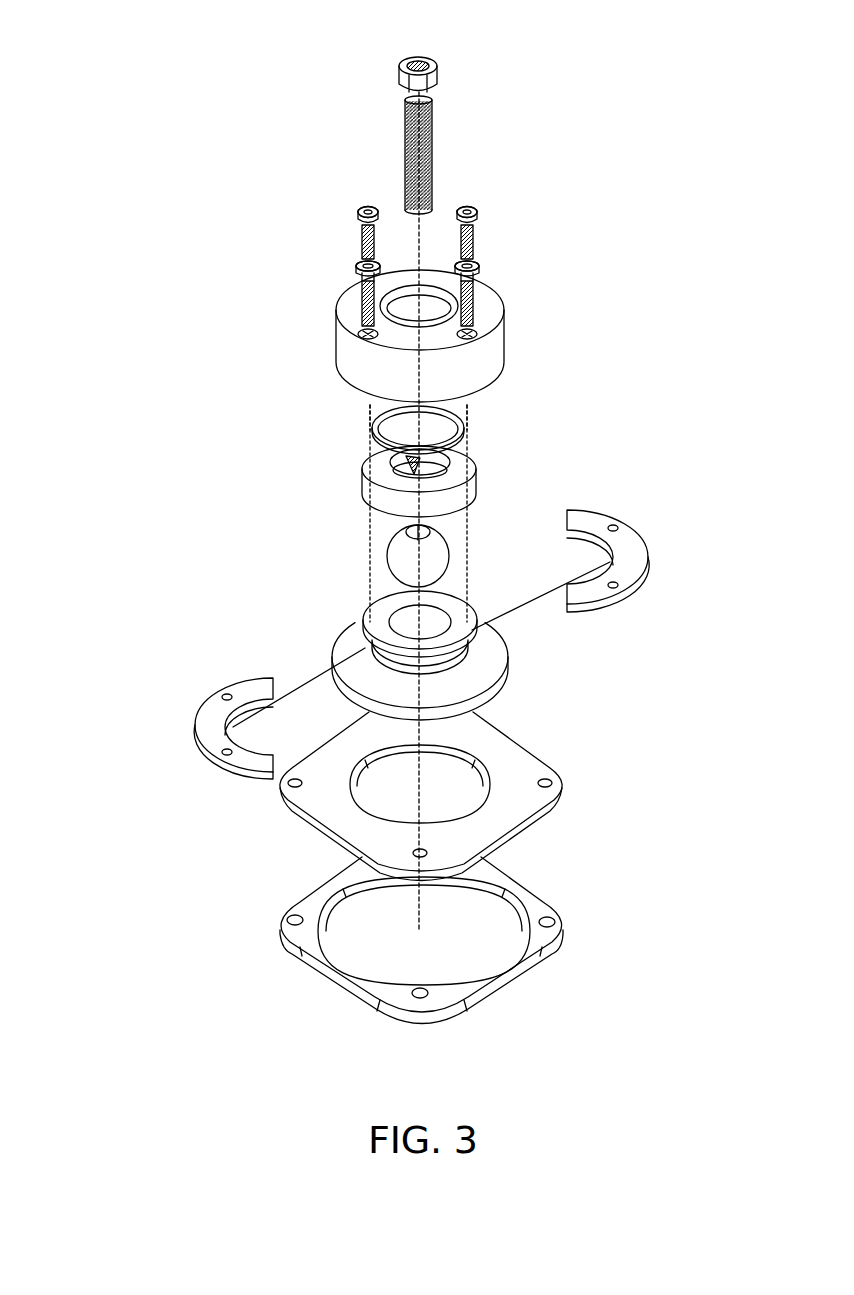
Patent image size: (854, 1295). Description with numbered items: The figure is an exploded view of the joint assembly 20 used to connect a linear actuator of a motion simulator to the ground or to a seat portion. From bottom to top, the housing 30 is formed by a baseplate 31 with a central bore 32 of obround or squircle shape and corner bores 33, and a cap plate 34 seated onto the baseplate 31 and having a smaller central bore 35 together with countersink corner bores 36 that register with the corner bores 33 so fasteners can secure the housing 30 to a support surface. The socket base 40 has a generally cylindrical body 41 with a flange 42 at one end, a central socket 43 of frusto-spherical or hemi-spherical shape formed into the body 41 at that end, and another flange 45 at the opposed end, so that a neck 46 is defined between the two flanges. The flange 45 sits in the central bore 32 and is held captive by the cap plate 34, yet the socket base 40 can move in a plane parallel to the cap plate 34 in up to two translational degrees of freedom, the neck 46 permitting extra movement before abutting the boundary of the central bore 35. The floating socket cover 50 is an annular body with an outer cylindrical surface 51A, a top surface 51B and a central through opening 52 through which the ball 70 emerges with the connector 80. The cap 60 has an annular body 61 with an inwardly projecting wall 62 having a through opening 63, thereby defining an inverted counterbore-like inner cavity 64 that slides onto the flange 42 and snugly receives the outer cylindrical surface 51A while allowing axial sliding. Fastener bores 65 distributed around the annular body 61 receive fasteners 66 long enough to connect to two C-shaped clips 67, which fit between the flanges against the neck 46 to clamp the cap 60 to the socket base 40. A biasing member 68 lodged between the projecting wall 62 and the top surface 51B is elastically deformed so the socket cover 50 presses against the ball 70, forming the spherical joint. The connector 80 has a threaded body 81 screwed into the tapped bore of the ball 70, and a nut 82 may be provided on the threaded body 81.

The joint assembly 20 is at (158, 262).
The housing 30 is at (415, 890).
The baseplate 31 is at (330, 968).
The central bore 32 is at (495, 905).
The corner bores 33 is at (290, 917).
The cap plate 34 is at (520, 765).
The central bore 35 is at (520, 850).
The corner bores 36 is at (547, 790).
The socket base 40 is at (441, 635).
The cylindrical body 41 is at (405, 620).
The flange 42 is at (372, 641).
The central socket 43 is at (392, 614).
The flange 45 is at (352, 692).
The neck 46 is at (447, 670).
The floating socket cover 50 is at (429, 459).
The outer cylindrical surface 51A is at (362, 482).
The top surface 51B is at (478, 440).
The through opening 52 is at (412, 466).
The cap 60 is at (446, 278).
The annular body 61 is at (348, 354).
The inwardly projecting wall 62 is at (482, 298).
The through opening 63 is at (428, 304).
The inner cavity 64 is at (410, 306).
The fastener bores 65 is at (356, 272).
The fasteners 66 is at (356, 212).
The C-shaped clips 67 is at (644, 553).
The biasing member 68 is at (468, 408).
The ball 70 is at (440, 562).
The connector 80 is at (448, 145).
The threaded body 81 is at (404, 140).
The nut 82 is at (440, 70).